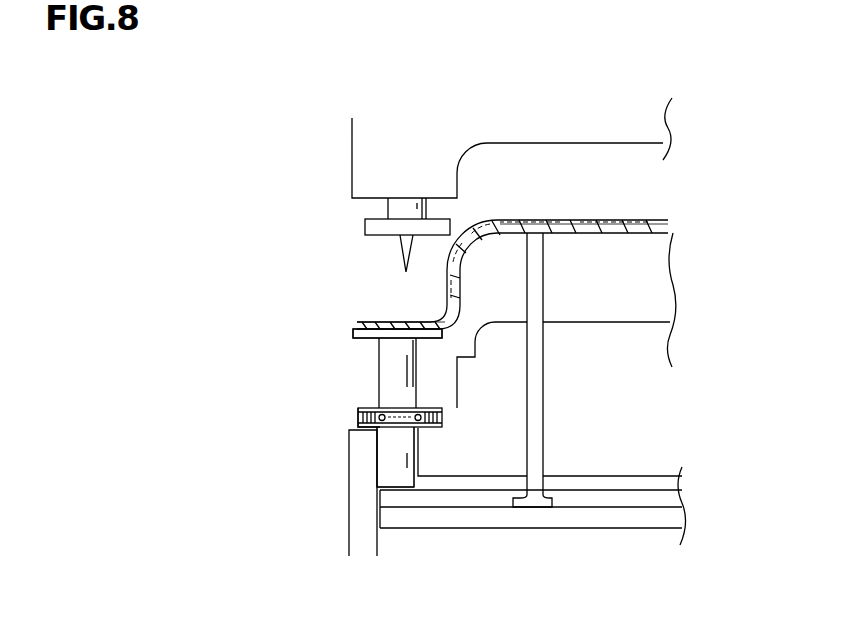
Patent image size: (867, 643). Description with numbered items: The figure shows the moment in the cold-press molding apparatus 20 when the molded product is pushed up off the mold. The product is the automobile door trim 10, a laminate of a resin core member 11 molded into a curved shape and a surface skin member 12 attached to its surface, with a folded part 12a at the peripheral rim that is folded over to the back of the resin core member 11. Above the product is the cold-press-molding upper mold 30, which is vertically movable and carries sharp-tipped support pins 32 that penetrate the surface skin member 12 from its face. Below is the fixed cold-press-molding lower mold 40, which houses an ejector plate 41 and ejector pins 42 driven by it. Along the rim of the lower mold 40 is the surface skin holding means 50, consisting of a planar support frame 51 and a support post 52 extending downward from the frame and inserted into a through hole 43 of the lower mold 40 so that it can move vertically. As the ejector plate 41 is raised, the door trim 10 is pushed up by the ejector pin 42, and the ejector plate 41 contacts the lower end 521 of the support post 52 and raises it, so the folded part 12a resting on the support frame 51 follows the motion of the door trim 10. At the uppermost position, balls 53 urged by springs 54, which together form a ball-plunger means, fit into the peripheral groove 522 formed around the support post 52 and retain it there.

The automobile door trim 10 is at (648, 212).
The resin core member 11 is at (611, 238).
The surface skin member 12 is at (518, 218).
The folded part 12a is at (452, 305).
The cold-press molding apparatus 20 is at (270, 412).
The cold-press-molding upper mold 30 is at (375, 142).
The support pin 32 is at (403, 255).
The cold-press-molding lower mold 40 is at (665, 350).
The ejector plate 41 is at (588, 498).
The ejector pin 42 is at (535, 352).
The through hole 43 is at (418, 458).
The surface skin holding means 50 is at (360, 352).
The support frame 51 is at (353, 330).
The support post 52 is at (383, 372).
The ball 53 is at (377, 430).
The spring 54 is at (357, 420).
The lower end of support post 521 is at (398, 490).
The peripheral groove 522 is at (408, 402).